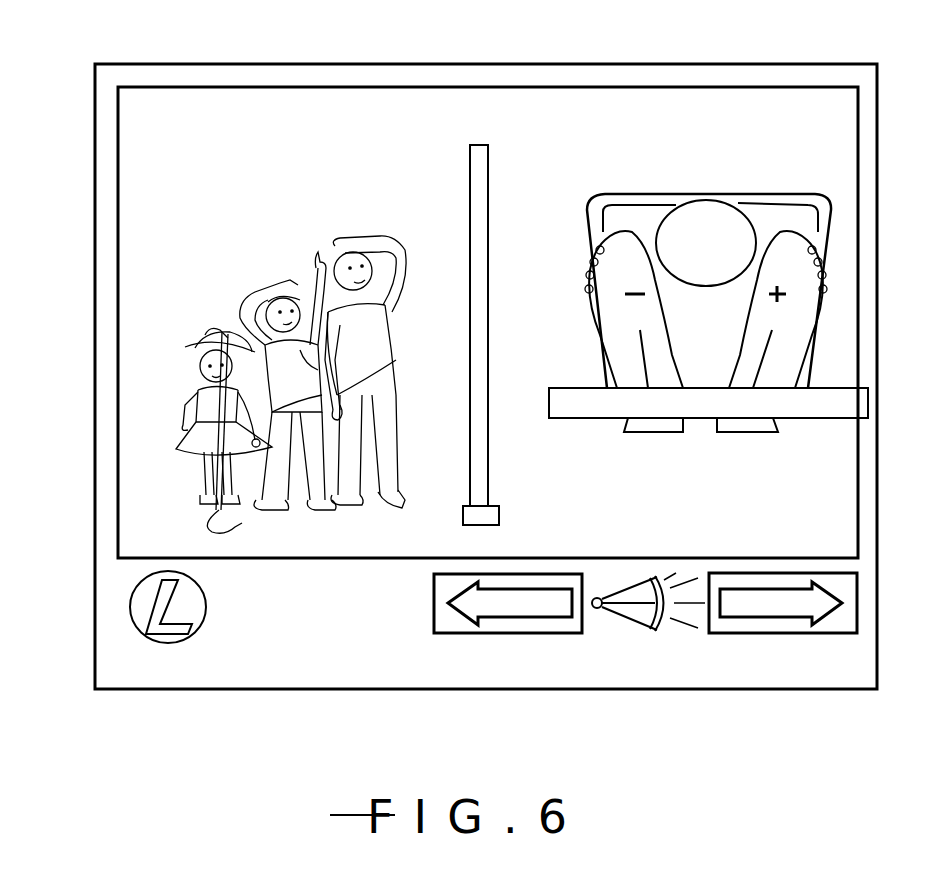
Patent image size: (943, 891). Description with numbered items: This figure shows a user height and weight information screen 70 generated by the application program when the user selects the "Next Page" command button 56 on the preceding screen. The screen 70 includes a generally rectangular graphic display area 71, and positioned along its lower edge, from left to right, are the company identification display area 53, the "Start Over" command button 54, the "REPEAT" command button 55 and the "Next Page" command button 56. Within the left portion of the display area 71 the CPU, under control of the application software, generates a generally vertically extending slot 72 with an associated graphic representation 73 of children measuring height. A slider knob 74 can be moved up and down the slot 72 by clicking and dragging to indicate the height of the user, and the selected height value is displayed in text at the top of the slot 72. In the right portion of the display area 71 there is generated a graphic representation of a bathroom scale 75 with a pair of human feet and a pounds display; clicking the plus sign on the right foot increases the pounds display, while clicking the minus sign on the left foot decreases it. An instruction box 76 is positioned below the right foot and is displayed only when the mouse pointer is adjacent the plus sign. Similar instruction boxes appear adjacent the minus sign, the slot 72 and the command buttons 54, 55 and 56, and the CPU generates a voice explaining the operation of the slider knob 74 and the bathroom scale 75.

The company identification display area 53 is at (132, 652).
The "Start Over" command button 54 is at (491, 633).
The "REPEAT" command button 55 is at (602, 619).
The "Next Page" command button 56 is at (768, 633).
The user height and weight information screen 70 is at (86, 367).
The graphic display area 71 is at (118, 212).
The slot 72 is at (470, 158).
The graphic representation of children measuring height 73 is at (177, 399).
The slider knob 74 is at (499, 517).
The bathroom scale 75 is at (752, 192).
The instruction box 76 is at (822, 418).